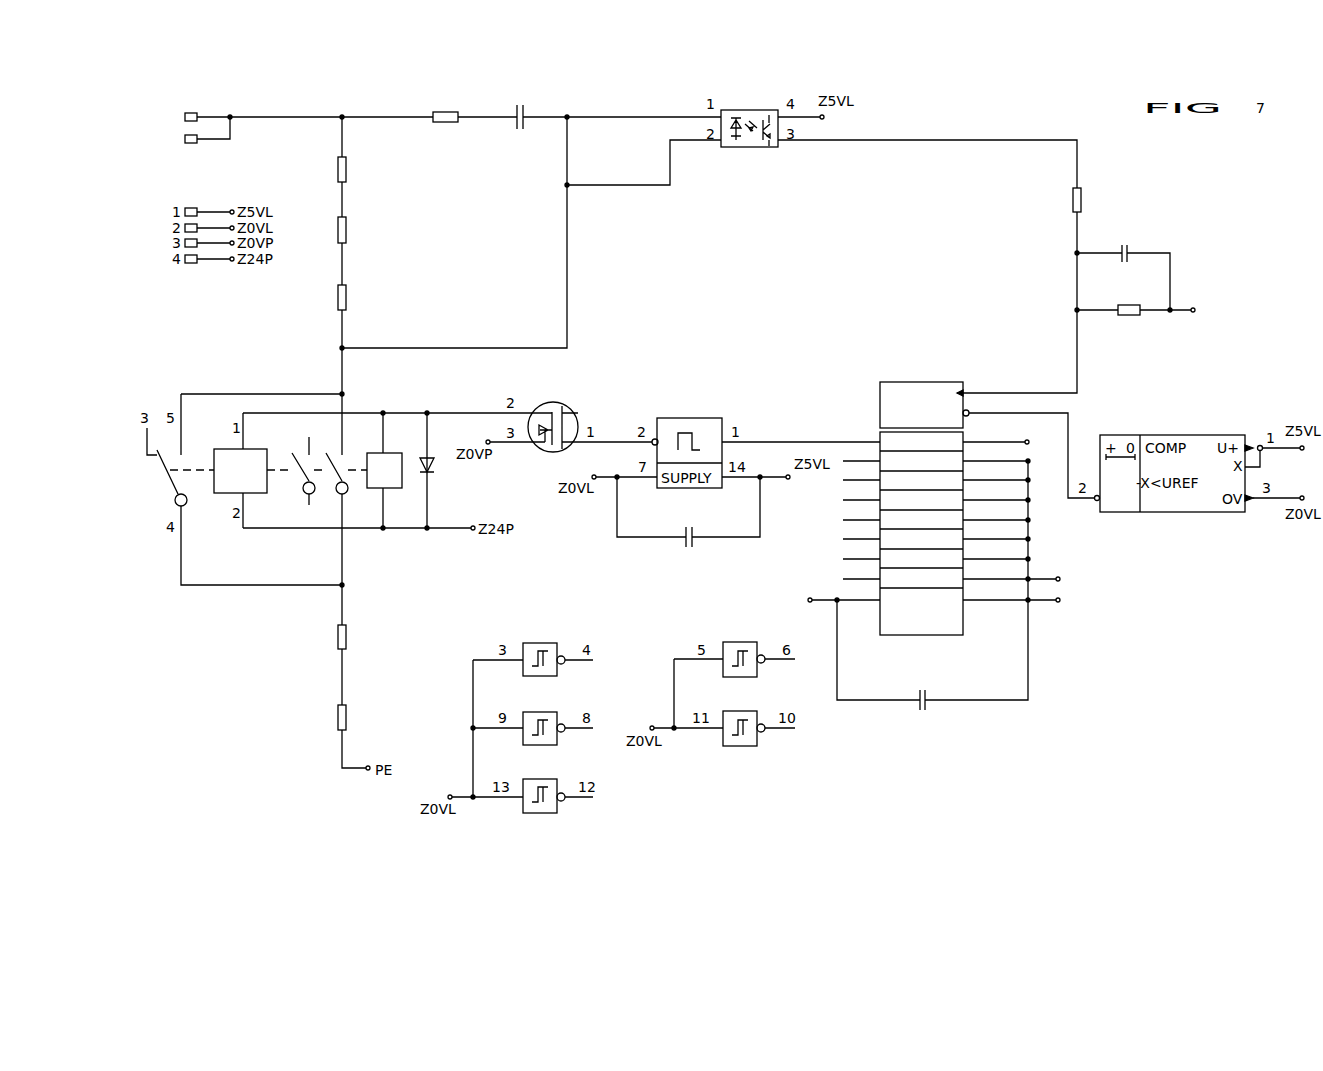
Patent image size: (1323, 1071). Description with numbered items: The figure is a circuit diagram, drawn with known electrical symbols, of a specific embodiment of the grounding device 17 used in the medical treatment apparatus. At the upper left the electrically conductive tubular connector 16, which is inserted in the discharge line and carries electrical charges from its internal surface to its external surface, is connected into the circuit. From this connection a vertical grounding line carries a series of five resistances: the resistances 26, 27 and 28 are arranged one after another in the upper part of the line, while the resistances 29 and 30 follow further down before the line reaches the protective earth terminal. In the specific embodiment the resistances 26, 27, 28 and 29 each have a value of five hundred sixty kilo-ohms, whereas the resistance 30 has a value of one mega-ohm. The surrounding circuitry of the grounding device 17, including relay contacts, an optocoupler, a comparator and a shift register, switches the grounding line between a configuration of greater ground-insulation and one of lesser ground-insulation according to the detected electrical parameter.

The tubular connector 16 is at (191, 114).
The grounding device 17 is at (1120, 685).
The resistance 26 is at (346, 165).
The resistance 27 is at (346, 228).
The resistance 28 is at (346, 300).
The resistance 29 is at (338, 633).
The resistance 30 is at (338, 720).